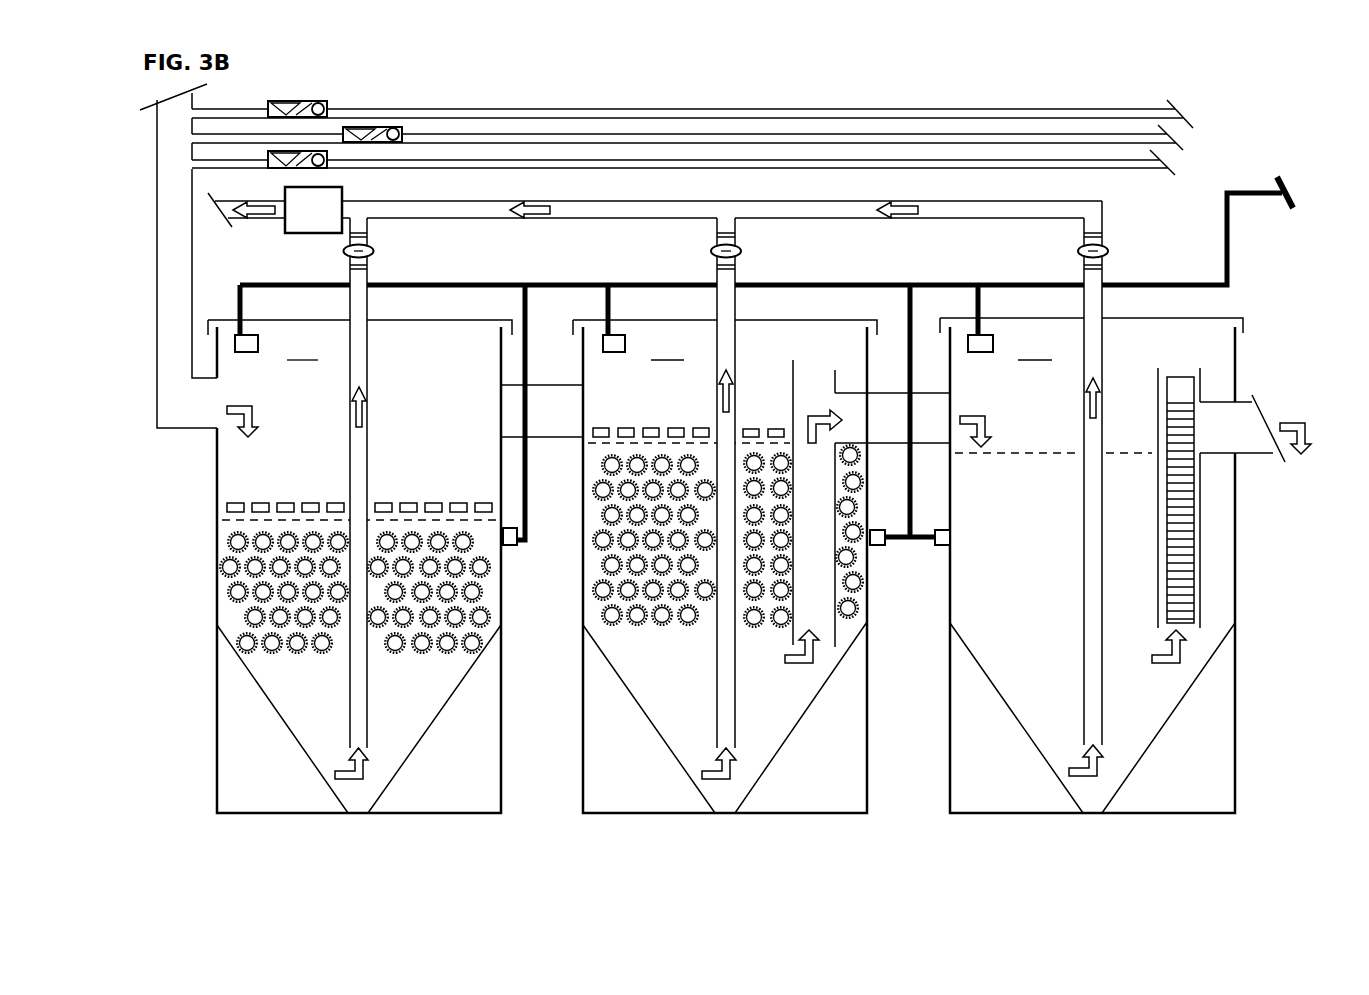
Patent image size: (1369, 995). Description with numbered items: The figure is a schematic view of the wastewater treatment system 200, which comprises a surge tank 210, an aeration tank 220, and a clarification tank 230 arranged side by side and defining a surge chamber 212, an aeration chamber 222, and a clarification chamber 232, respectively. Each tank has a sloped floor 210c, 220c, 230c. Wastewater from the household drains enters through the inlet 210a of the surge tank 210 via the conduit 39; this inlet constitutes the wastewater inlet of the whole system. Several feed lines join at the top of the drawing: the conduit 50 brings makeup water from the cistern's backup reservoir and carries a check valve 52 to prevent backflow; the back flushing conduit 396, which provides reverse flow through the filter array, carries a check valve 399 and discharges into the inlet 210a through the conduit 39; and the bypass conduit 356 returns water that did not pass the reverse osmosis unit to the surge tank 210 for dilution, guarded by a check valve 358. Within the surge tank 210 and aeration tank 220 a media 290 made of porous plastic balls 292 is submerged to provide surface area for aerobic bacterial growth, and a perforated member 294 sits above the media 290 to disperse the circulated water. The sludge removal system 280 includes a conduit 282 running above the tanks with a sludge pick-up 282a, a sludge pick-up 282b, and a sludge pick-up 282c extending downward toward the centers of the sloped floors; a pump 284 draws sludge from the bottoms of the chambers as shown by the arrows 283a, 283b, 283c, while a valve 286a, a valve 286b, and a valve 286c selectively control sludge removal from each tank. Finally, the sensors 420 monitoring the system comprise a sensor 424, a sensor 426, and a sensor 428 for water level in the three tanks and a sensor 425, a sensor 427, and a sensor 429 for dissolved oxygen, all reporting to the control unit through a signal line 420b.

The wastewater treatment system 200 is at (1178, 73).
The conduit 39 is at (157, 302).
The conduit 50 is at (868, 117).
The back flushing conduit 396 is at (900, 133).
The bypass conduit 356 is at (932, 160).
The check valve 52 is at (310, 103).
The check valve 358 is at (308, 150).
The check valve 399 is at (382, 130).
The sludge removal system 280 is at (710, 136).
The conduit 282 is at (698, 494).
The sludge pick-up 282a is at (400, 483).
The sludge pick-up 282b is at (767, 483).
The sludge pick-up 282c is at (1133, 473).
The arrows 283a is at (335, 775).
The arrows 283b is at (702, 775).
The arrows 283c is at (1067, 773).
The pump 284 is at (317, 217).
The valve 286a is at (375, 252).
The valve 286b is at (743, 252).
The valve 286c is at (1109, 252).
The sensors 420 is at (797, 382).
The signal line 420b is at (1245, 188).
The sensor 424 is at (243, 345).
The sensor 426 is at (612, 345).
The sensor 428 is at (980, 345).
The sensor 425 is at (510, 542).
The sensor 427 is at (878, 540).
The sensor 429 is at (940, 540).
The surge tank 210 is at (321, 601).
The inlet 210a is at (208, 413).
The sloped floor 210c is at (293, 732).
The surge chamber 212 is at (302, 348).
The aeration tank 220 is at (699, 600).
The sloped floor 220c is at (653, 725).
The aeration chamber 222 is at (667, 348).
The clarification tank 230 is at (1097, 600).
The sloped floor 230c is at (1023, 730).
The clarification chamber 232 is at (1035, 348).
The media 290 is at (503, 556).
The balls 292 is at (230, 588).
The perforated member 294 is at (287, 507).